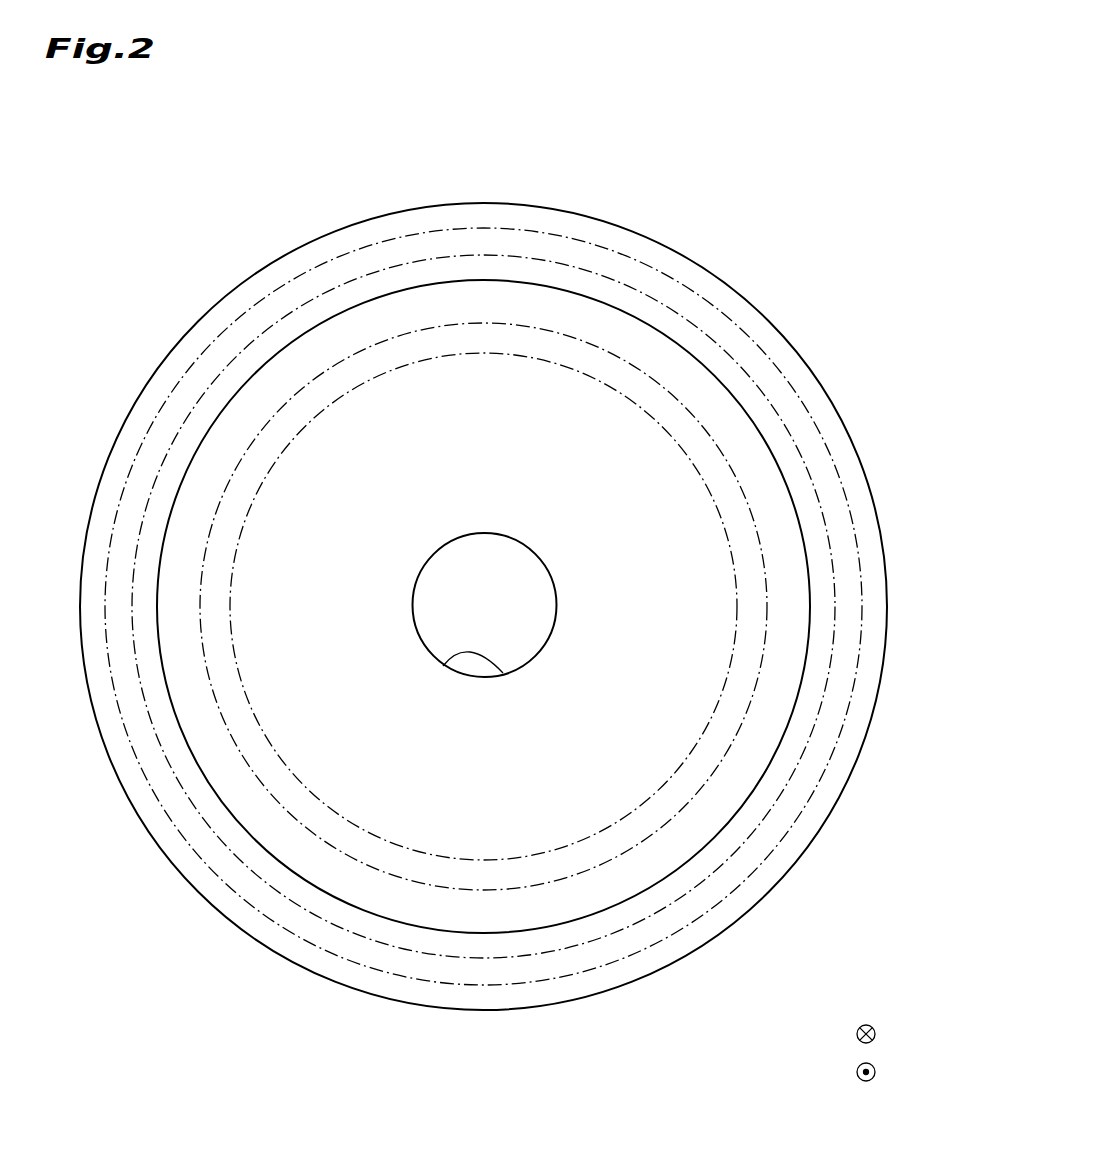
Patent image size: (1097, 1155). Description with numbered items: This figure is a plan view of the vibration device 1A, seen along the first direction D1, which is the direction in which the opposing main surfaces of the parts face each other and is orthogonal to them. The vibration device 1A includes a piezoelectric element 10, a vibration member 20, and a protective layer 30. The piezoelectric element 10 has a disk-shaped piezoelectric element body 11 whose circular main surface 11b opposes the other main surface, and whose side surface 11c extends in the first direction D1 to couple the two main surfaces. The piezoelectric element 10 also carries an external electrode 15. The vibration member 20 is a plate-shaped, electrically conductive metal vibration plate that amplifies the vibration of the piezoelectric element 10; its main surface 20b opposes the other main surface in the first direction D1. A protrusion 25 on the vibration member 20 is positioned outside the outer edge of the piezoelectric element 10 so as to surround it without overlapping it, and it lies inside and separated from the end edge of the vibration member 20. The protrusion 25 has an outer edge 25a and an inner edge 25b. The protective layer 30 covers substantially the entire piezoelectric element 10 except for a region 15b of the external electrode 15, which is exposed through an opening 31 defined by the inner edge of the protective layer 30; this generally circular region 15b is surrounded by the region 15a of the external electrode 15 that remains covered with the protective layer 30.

The vibration device 1A is at (701, 124).
The piezoelectric element 10 is at (380, 883).
The piezoelectric element body 11 is at (335, 355).
The main surface 11b is at (702, 758).
The side surface 11c is at (252, 778).
The external electrode 15 is at (741, 590).
The region covered with the protective layer 15a is at (507, 390).
The region exposed from the protective layer 15b is at (478, 556).
The vibration member 20 is at (206, 909).
The main surface 20b is at (663, 922).
The protrusion 25 is at (426, 968).
The outer edge 25a is at (263, 918).
The inner edge 25b is at (288, 902).
The protective layer 30 is at (770, 426).
The opening 31 is at (503, 673).
The first direction D1 is at (877, 1039).